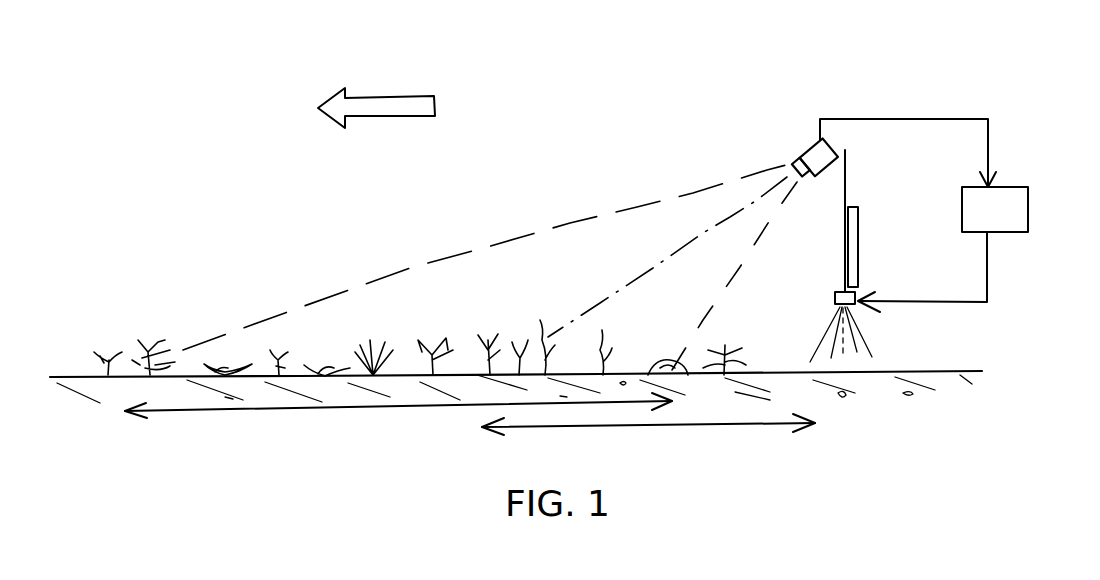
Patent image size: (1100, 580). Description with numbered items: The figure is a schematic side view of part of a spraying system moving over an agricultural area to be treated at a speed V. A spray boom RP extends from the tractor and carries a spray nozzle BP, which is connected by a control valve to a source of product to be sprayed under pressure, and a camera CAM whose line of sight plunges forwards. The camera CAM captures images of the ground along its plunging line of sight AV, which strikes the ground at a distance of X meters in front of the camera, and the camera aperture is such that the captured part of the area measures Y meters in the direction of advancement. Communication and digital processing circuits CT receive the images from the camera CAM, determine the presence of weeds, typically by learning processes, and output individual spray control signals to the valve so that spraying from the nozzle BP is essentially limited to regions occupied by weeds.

The speed V is at (390, 108).
The camera CAM is at (802, 130).
The plunging line of sight AV is at (662, 265).
The spray boom RP is at (858, 250).
The spray nozzle BP is at (833, 294).
The communication and digital processing circuits CT is at (1008, 218).
The dimension of captured part of area Y is at (398, 423).
The distance in front of the camera X is at (648, 441).